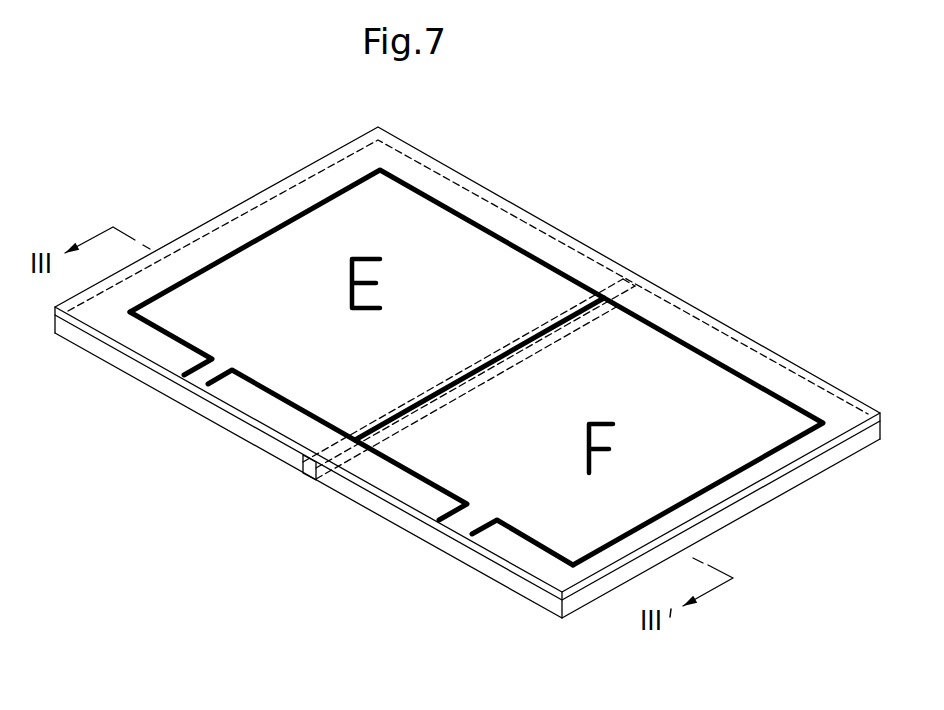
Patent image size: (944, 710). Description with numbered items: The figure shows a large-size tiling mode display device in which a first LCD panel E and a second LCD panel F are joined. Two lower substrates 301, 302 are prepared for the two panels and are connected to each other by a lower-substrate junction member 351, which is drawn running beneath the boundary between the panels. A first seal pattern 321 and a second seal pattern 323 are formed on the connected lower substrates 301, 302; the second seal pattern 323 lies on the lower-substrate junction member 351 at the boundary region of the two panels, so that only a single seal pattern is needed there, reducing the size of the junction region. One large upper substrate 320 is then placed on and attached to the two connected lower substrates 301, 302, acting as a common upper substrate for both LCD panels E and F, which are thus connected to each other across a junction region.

The lower substrate 301 is at (140, 372).
The lower substrate 302 is at (397, 521).
The upper substrate 320 is at (476, 350).
The first seal pattern 321 is at (483, 226).
The second seal pattern 323 is at (577, 303).
The lower-substrate junction member 351 is at (303, 474).